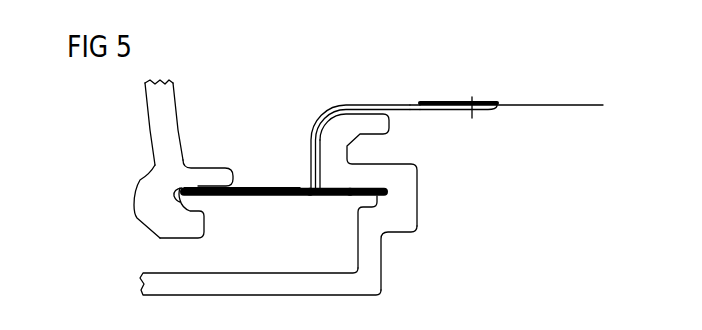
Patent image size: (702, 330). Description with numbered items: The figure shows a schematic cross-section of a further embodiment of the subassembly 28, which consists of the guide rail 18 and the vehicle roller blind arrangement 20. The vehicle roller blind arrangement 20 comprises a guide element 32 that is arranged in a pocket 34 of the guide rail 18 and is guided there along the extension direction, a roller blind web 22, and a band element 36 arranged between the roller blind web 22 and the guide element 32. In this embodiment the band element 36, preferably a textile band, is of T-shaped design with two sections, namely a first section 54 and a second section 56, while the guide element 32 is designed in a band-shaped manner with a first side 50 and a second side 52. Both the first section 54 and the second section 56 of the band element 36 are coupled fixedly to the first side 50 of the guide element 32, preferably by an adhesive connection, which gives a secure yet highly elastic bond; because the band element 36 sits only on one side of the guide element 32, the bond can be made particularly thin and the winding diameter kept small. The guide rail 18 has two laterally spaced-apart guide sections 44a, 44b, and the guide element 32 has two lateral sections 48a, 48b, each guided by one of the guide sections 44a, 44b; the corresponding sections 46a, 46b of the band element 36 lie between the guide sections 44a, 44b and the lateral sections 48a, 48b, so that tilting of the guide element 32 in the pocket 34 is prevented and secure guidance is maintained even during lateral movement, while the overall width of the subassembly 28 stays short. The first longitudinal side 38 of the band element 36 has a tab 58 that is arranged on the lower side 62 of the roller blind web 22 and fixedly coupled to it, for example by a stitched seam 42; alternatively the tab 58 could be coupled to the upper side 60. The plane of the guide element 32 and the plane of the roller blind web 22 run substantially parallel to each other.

The guide rail 18 is at (378, 276).
The vehicle roller blind arrangement 20 is at (443, 111).
The roller blind web 22 is at (570, 103).
The subassembly 28 is at (381, 207).
The guide element 32 is at (314, 197).
The pocket 34 is at (183, 214).
The band element 36 is at (343, 100).
The first longitudinal side 38 is at (488, 113).
The stitched seam 42 is at (462, 113).
The first guide section 44a is at (222, 172).
The second guide section 44b is at (372, 162).
The first section of the band element 46a is at (200, 183).
The second section of the band element 46b is at (309, 172).
The first lateral section 48a is at (204, 200).
The second lateral section 48b is at (378, 215).
The first side 50 is at (246, 188).
The second side 52 is at (325, 200).
The first section 54 is at (287, 188).
The second section 56 is at (380, 184).
The tab 58 is at (412, 102).
The upper side 60 is at (513, 101).
The lower side 62 is at (530, 107).